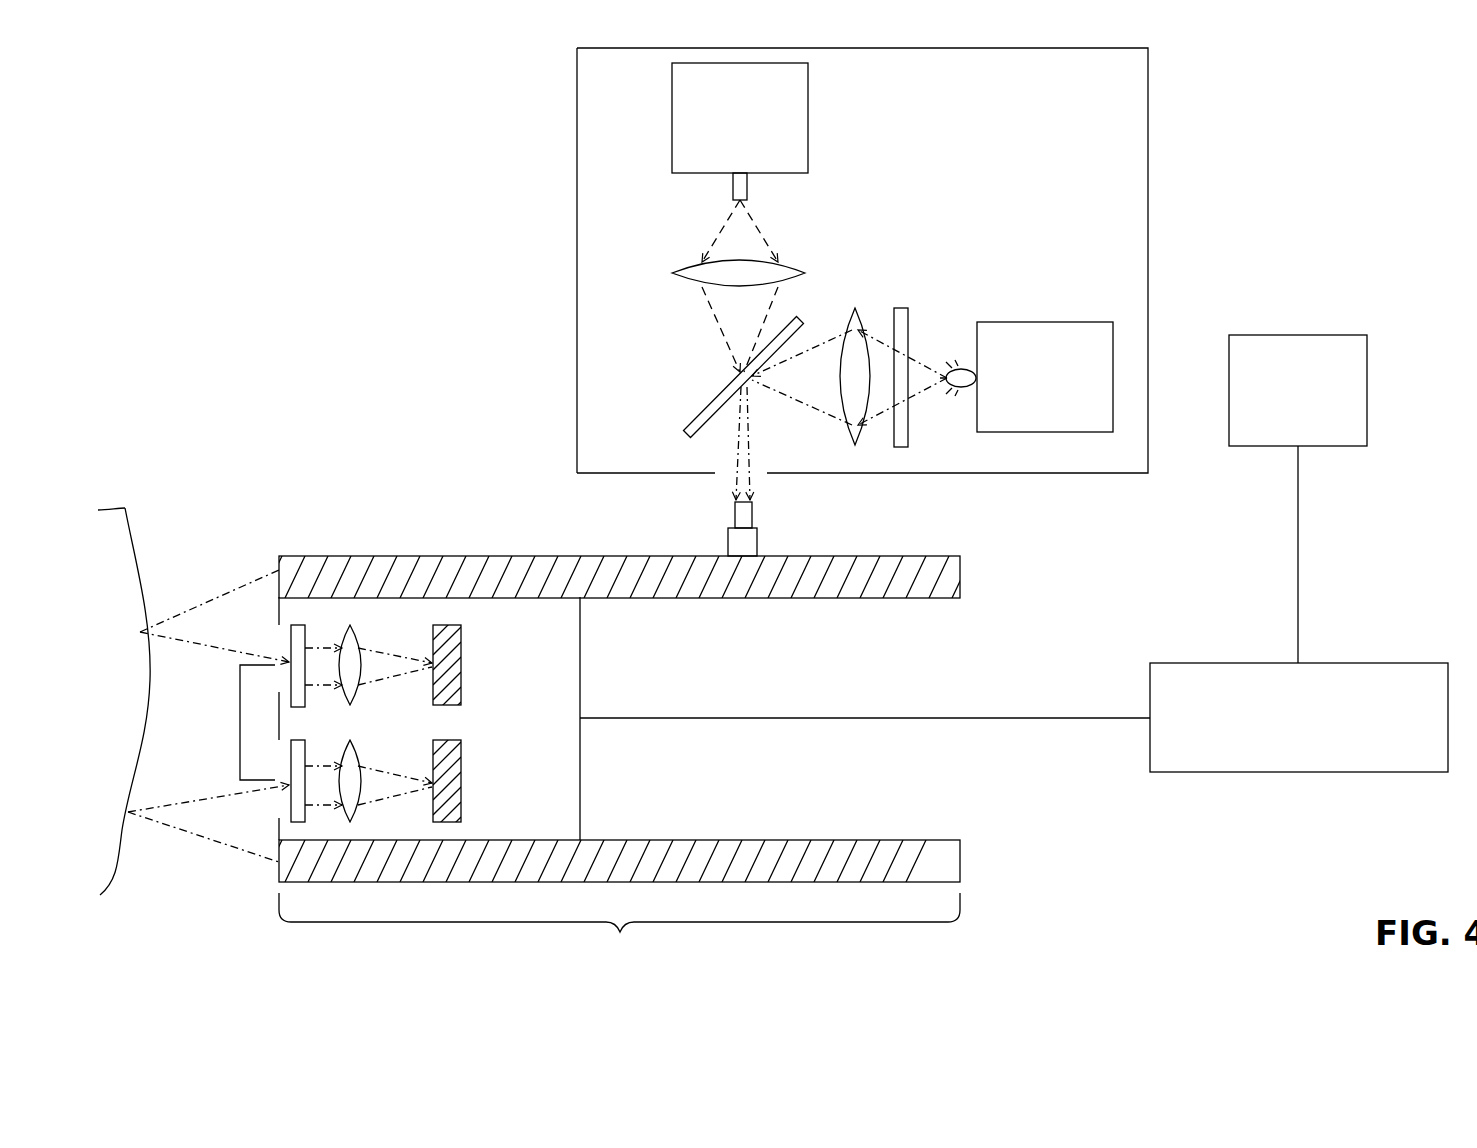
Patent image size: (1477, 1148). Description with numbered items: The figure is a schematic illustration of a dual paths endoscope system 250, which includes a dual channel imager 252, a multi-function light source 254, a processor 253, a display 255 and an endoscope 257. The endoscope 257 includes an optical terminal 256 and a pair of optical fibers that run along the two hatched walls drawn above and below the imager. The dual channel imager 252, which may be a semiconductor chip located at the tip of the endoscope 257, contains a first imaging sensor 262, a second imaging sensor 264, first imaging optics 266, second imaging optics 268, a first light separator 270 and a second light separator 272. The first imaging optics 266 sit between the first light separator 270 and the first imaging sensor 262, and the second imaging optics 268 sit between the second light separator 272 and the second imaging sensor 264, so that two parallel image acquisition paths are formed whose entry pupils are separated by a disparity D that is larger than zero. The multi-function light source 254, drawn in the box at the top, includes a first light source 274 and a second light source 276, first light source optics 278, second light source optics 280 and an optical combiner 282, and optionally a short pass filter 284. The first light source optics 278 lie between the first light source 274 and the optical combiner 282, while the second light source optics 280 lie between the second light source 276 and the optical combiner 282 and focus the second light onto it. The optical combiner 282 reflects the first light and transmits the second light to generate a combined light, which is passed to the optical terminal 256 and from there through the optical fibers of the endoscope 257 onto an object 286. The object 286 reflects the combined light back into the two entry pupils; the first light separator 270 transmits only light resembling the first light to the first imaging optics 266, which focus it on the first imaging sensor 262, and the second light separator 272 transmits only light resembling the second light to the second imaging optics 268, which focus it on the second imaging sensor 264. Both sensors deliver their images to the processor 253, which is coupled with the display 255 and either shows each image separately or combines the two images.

The dual paths endoscope system 250 is at (1256, 198).
The dual channel imager 252 is at (583, 648).
The processor 253 is at (1410, 773).
The multi-function light source 254 is at (1148, 198).
The display 255 is at (1345, 335).
The optical terminal 256 is at (733, 512).
The endoscope 257 is at (620, 933).
The first imaging sensor 262 is at (461, 637).
The second imaging sensor 264 is at (461, 752).
The first imaging optics 266 is at (360, 692).
The second imaging optics 268 is at (360, 810).
The first light separator 270 is at (295, 707).
The second light separator 272 is at (295, 822).
The first light source 274 is at (1095, 322).
The second light source 276 is at (808, 118).
The first light source optics 278 is at (855, 308).
The second light source optics 280 is at (675, 272).
The optical combiner 282 is at (688, 420).
The short pass filter 284 is at (901, 308).
The object 286 is at (125, 508).
The disparity D is at (240, 722).